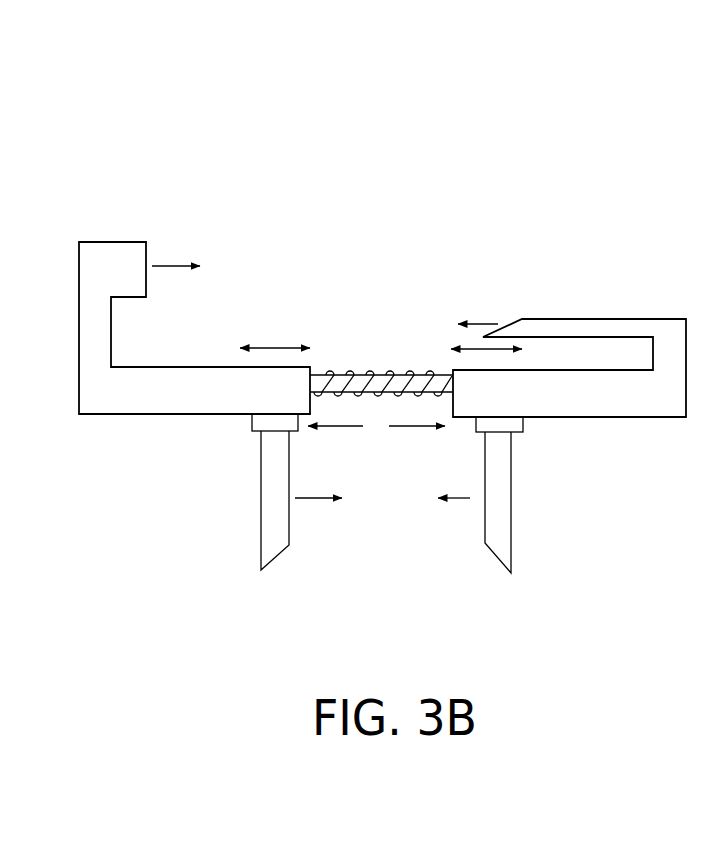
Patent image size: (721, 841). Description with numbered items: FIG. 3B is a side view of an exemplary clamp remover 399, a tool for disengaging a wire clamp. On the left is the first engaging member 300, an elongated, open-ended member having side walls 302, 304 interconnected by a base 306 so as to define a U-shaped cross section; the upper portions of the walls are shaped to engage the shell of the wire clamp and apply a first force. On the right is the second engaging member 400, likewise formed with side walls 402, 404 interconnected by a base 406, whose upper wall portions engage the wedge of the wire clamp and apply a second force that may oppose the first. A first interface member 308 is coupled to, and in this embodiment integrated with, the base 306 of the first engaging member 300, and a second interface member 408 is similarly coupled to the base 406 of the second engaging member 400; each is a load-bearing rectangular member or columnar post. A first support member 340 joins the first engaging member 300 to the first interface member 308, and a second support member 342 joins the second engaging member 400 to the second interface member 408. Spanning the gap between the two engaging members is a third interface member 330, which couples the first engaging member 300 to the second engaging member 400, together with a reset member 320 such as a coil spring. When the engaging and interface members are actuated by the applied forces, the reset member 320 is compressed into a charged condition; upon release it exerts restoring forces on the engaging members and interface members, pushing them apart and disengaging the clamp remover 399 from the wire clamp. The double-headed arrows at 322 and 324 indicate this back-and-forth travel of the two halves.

The clamp remover 399 is at (349, 86).
The first engaging member 300 is at (138, 345).
The side wall 302 is at (76, 277).
The side wall 304 is at (165, 373).
The base 306 is at (103, 392).
The first interface member 308 is at (262, 550).
The reset member 320 is at (345, 373).
The first displacement 322 is at (275, 330).
The second displacement 324 is at (485, 350).
The third interface member 330 is at (338, 373).
The first support member 340 is at (250, 425).
The second support member 342 is at (517, 435).
The second engaging member 400 is at (561, 313).
The side wall 402 is at (691, 342).
The side wall 404 is at (585, 427).
The base 406 is at (599, 403).
The second interface member 408 is at (512, 543).